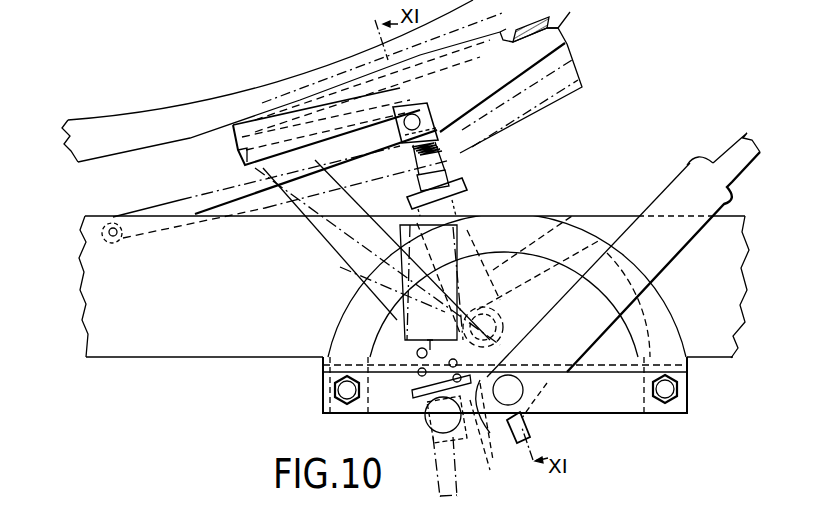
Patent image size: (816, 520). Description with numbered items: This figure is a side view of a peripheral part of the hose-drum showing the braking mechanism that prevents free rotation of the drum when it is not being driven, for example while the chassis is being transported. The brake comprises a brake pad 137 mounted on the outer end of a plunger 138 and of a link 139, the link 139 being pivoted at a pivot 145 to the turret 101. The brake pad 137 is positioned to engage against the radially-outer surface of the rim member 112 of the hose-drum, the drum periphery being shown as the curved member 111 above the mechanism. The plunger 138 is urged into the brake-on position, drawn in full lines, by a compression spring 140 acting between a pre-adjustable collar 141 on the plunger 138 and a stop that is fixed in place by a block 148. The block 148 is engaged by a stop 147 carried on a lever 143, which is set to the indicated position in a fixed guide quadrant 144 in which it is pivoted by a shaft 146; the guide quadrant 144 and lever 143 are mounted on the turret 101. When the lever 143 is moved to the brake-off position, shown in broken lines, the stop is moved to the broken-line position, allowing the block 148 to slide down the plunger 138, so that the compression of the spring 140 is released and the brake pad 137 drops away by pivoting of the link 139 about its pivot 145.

The turret 101 is at (218, 338).
The curved beam 111 is at (196, 108).
The rim member 112 is at (562, 15).
The brake pad 137 is at (552, 24).
The plunger 138 is at (434, 156).
The link 139 is at (210, 192).
The compression spring 140 is at (570, 215).
The pre-adjustable collar 141 is at (465, 187).
The lever 143 is at (332, 266).
The guide quadrant 144 is at (350, 332).
The pivot 145 is at (111, 222).
The shaft 146 is at (508, 392).
The stop 147 is at (482, 450).
The block 148 is at (505, 312).